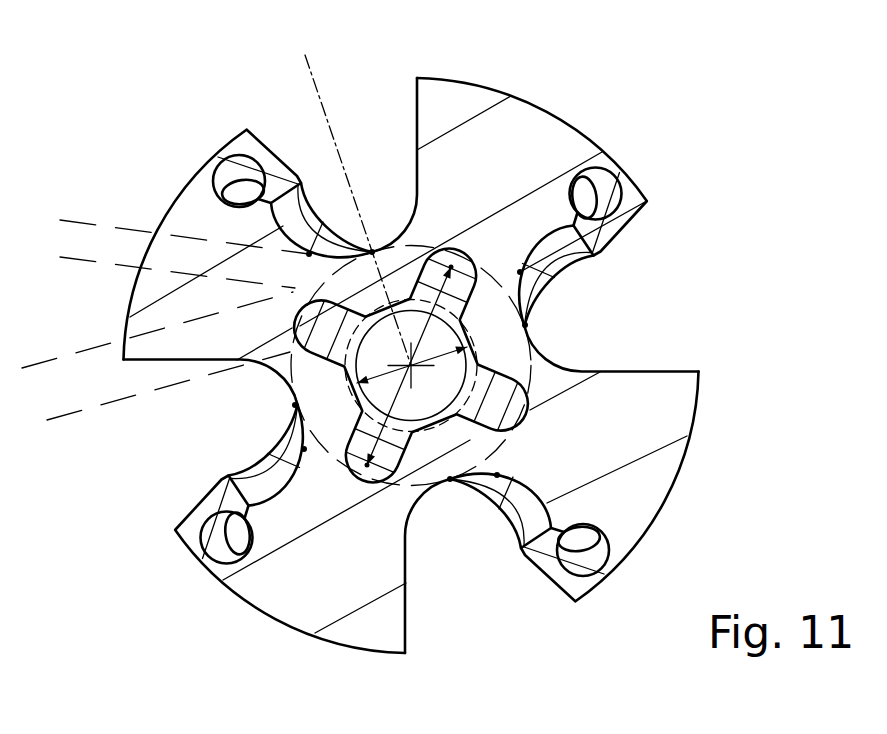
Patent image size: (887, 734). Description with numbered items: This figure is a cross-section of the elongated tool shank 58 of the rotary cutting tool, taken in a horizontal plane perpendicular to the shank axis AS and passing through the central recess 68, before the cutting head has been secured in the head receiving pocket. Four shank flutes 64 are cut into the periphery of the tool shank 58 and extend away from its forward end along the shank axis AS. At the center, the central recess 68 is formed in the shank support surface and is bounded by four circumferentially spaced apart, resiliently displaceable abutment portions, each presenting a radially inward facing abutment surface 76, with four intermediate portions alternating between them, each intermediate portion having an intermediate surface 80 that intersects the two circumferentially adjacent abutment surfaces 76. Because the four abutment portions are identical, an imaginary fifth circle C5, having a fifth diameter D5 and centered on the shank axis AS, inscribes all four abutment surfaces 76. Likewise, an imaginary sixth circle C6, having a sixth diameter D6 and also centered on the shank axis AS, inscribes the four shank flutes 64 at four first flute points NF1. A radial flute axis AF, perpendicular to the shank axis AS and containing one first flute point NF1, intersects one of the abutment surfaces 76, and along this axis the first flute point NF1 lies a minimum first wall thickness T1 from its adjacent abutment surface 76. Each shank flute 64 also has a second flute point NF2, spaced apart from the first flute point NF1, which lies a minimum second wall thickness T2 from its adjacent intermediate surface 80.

The tool shank 58 is at (588, 100).
The shank flute 64 is at (389, 114).
The central recess 68 is at (387, 363).
The abutment surface 76 is at (411, 366).
The intermediate surface 80 is at (338, 332).
The shank axis AS is at (428, 371).
The radial flute axis AF is at (343, 195).
The fifth circle C5 is at (585, 372).
The sixth circle C6 is at (423, 246).
The fifth diameter D5 is at (467, 347).
The sixth diameter D6 is at (452, 263).
The first flute point NF1 is at (458, 380).
The second flute point NF2 is at (442, 363).
The first wall thickness T1 is at (64, 416).
The second wall thickness T2 is at (73, 257).